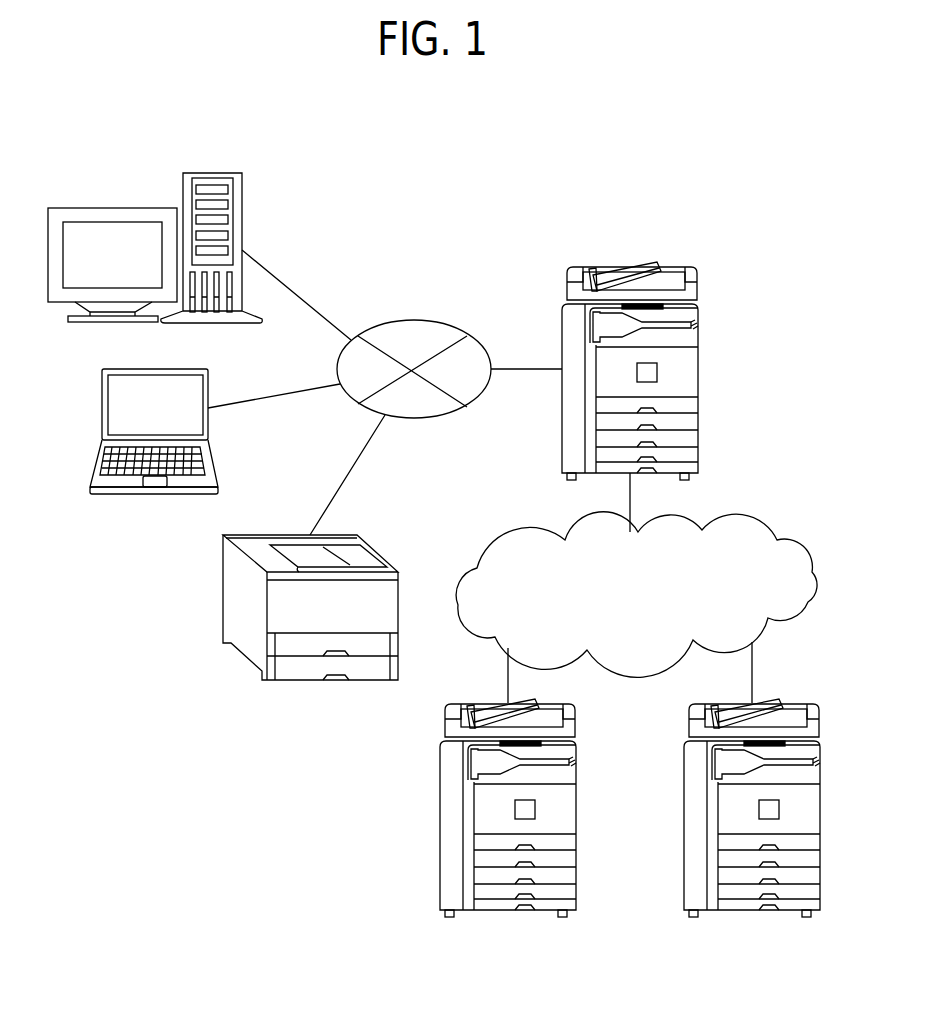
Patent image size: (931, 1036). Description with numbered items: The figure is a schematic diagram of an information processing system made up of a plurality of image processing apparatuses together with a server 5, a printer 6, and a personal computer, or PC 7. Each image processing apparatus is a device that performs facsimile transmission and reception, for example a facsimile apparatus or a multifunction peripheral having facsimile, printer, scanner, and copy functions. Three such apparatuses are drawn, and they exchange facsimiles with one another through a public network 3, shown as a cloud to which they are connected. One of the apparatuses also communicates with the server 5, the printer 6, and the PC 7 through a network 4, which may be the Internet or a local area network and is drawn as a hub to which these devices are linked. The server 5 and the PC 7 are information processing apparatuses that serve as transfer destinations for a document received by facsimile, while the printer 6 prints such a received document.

The public network 3 is at (768, 527).
The network 4 is at (414, 320).
The server 5 is at (210, 172).
The printer 6 is at (298, 682).
The personal computer (PC) 7 is at (152, 495).